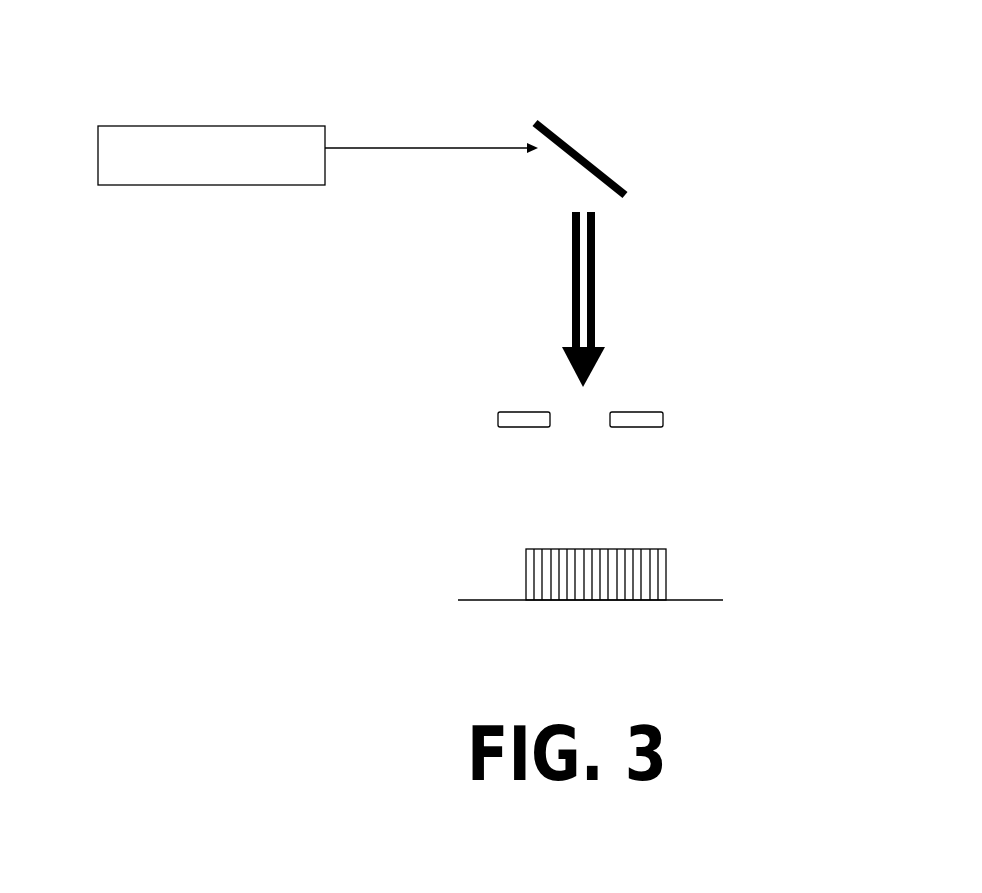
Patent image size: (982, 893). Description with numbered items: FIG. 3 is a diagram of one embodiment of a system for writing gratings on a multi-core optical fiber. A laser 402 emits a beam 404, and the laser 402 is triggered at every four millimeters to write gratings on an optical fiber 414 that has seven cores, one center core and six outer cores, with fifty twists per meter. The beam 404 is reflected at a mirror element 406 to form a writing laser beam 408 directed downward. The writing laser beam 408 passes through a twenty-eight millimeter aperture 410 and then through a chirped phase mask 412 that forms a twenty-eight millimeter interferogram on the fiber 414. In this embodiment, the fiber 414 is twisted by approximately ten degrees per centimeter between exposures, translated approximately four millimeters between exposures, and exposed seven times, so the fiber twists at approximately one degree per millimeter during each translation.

The laser 402 is at (202, 133).
The beam 404 is at (440, 150).
The mirror 406 is at (550, 118).
The writing laser beam 408 is at (593, 307).
The 28 mm aperture 410 is at (515, 412).
The chirped phase mask 412 is at (525, 568).
The optical fiber 414 is at (708, 600).